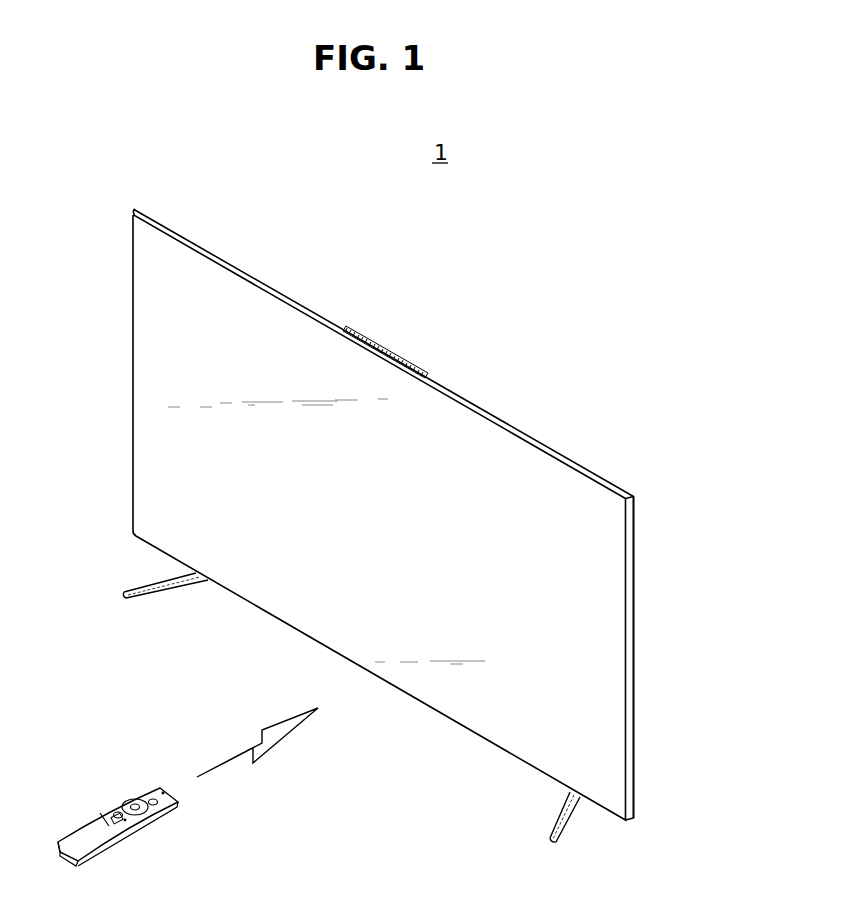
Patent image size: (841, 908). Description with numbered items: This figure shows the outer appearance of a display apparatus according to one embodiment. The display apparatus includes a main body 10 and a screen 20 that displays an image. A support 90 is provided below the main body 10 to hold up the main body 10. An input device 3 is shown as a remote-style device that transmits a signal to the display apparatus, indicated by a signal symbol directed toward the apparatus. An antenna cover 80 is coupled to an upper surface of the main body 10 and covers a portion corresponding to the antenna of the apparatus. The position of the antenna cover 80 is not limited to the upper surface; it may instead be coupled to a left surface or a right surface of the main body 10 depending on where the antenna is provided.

The main body 10 is at (258, 274).
The screen 20 is at (608, 631).
The antenna cover 80 is at (397, 361).
The support 90 is at (168, 588).
The input device 3 is at (92, 828).